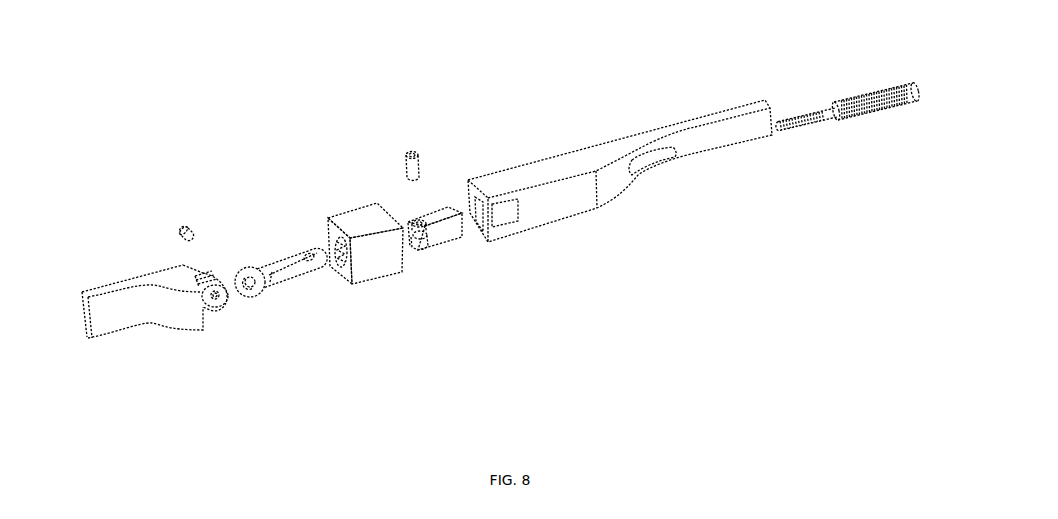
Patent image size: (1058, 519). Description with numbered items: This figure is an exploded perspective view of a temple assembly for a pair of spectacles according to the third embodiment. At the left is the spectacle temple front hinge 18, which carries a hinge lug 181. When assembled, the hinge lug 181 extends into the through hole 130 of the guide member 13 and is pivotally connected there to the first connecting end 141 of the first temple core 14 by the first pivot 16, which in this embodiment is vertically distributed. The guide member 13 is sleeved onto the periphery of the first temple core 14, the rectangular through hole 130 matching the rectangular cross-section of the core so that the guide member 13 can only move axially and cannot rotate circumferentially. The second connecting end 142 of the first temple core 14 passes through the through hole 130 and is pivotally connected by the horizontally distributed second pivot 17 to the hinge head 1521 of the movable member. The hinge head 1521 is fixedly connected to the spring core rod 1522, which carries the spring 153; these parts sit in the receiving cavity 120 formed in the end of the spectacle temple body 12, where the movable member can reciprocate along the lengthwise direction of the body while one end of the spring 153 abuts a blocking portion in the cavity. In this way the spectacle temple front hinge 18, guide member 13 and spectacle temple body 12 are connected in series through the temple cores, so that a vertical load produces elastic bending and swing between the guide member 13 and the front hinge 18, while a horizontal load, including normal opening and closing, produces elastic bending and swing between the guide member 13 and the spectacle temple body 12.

The spectacle temple body 12 is at (545, 178).
The receiving cavity 120 is at (485, 220).
The guide member 13 is at (358, 220).
The through hole 130 is at (346, 265).
The first temple core 14 is at (280, 260).
The first connecting end 141 is at (256, 297).
The second connecting end 142 is at (317, 270).
The first pivot 16 is at (181, 226).
The second pivot 17 is at (405, 150).
The spectacle temple front hinge 18 is at (158, 272).
The hinge lug 181 is at (218, 302).
The hinge head 1521 is at (442, 242).
The spring core rod 1522 is at (828, 117).
The spring 153 is at (888, 107).